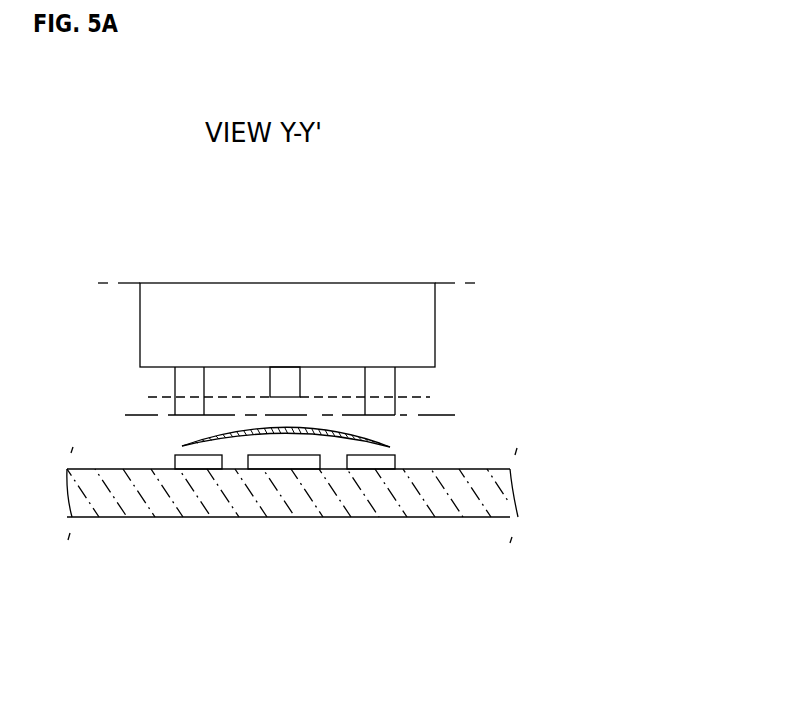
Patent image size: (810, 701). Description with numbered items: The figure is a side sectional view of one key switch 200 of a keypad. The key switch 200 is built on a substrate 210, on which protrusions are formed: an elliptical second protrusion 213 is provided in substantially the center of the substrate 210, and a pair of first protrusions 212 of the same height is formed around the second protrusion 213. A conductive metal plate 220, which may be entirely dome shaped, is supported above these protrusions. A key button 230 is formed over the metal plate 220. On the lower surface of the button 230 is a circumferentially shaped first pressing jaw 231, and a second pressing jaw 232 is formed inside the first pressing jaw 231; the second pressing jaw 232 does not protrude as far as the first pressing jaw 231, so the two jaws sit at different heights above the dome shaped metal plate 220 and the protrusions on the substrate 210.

The key switch 200 is at (440, 234).
The substrate 210 is at (437, 507).
The first protrusions 212 is at (372, 463).
The second protrusion 213 is at (300, 462).
The metal plate 220 is at (395, 447).
The key button 230 is at (435, 313).
The first pressing jaw 231 is at (175, 394).
The second pressing jaw 232 is at (282, 380).